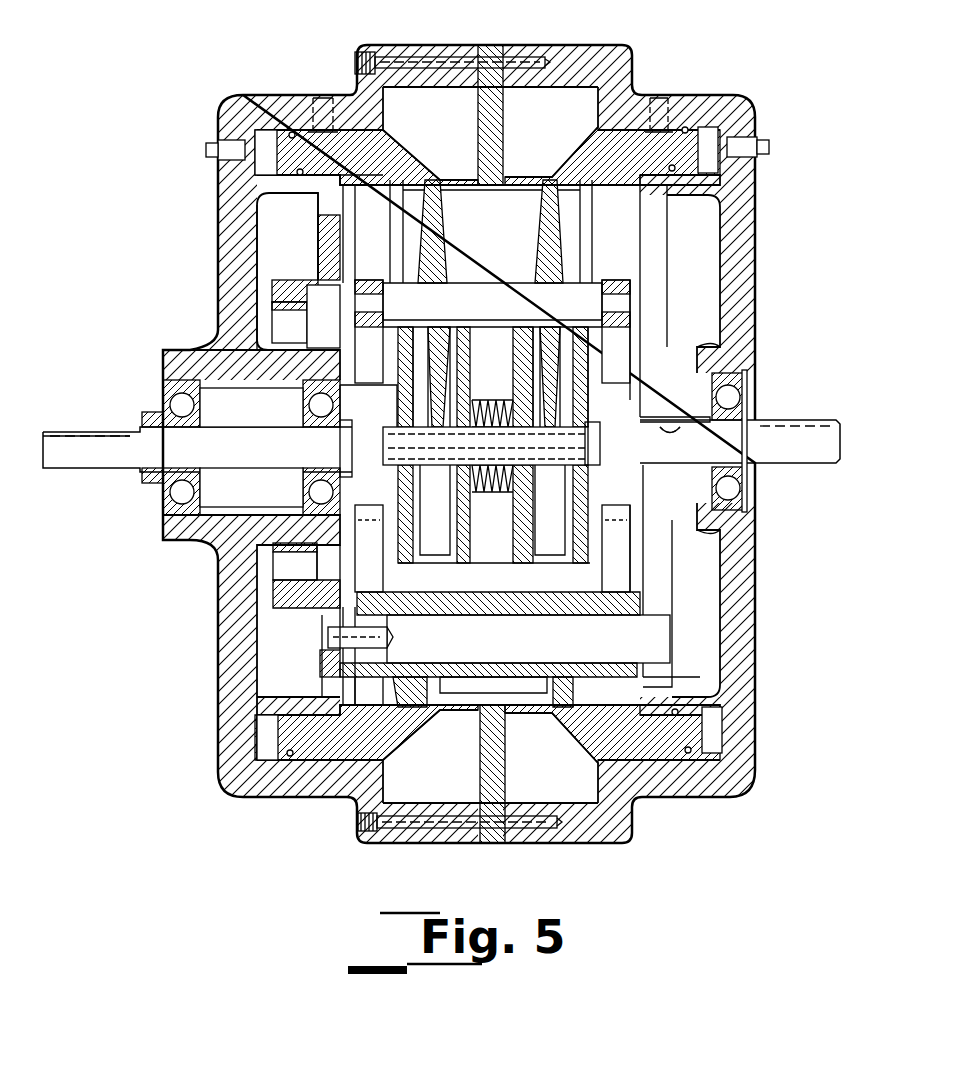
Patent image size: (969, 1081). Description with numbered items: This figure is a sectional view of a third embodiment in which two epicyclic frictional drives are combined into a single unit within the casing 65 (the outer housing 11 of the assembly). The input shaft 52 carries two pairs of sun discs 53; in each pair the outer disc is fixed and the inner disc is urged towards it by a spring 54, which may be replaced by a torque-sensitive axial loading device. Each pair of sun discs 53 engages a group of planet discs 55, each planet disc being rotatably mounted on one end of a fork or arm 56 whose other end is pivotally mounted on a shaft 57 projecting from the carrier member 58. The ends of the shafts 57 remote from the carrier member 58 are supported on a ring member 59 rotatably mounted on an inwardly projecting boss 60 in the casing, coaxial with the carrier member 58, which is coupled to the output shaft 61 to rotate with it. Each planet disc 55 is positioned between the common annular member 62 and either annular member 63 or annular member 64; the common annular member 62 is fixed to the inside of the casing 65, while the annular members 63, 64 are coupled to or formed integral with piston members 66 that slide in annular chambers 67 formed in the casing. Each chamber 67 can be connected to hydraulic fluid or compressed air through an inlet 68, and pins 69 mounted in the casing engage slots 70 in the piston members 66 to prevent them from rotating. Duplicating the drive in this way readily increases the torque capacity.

The housing 11 is at (757, 213).
The input shaft 52 is at (83, 455).
The sun discs 53 is at (425, 560).
The spring 54 is at (487, 480).
The planet discs 55 is at (447, 240).
The fork or arm 56 is at (491, 431).
The shafts 57 is at (628, 388).
The carrier member 58 is at (668, 590).
The ring member 59 is at (288, 636).
The inwardly projecting boss 60 is at (315, 338).
The output shaft 61 is at (812, 455).
The common annular member 62 is at (505, 122).
The annular member 63 is at (405, 165).
The annular member 64 is at (588, 158).
The casing 65 is at (623, 85).
The piston members 66 is at (390, 165).
The annular chambers 67 is at (268, 115).
The inlet 68 is at (212, 160).
The pins 69 is at (322, 108).
The slots 70 is at (347, 180).